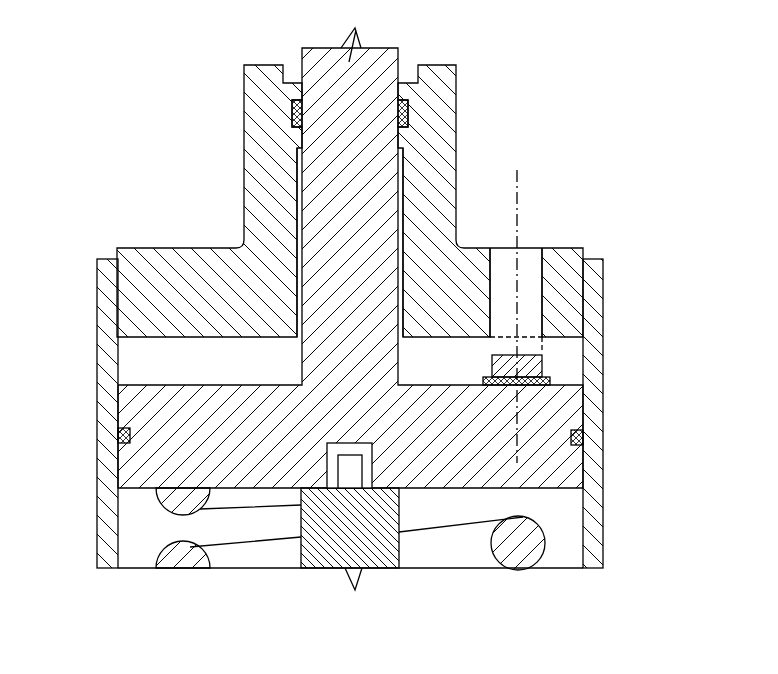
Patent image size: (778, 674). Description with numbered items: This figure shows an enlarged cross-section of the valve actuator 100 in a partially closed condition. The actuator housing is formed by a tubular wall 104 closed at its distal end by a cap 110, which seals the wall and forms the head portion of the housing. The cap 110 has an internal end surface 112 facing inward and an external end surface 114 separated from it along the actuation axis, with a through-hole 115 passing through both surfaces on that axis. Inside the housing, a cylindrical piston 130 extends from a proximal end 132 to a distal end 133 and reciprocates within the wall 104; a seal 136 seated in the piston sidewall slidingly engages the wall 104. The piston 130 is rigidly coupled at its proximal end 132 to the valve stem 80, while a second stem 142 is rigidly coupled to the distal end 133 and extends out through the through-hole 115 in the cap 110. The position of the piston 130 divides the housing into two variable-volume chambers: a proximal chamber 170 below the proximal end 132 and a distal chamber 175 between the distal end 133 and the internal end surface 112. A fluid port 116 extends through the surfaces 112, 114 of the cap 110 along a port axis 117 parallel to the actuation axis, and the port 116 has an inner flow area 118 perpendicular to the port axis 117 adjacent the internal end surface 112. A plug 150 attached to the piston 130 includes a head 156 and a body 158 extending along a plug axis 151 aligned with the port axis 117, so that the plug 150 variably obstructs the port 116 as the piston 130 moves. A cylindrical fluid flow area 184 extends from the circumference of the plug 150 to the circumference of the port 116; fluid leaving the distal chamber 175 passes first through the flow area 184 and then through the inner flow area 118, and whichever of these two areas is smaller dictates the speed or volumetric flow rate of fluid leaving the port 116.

The valve actuator 100 is at (157, 42).
The tubular wall 104 is at (105, 288).
The cap 110 is at (267, 117).
The internal end surface 112 is at (125, 340).
The external end surface 114 is at (168, 240).
The through-hole 115 is at (290, 188).
The fluid port 116 is at (492, 267).
The port axis 117 is at (517, 172).
The inner flow area 118 is at (527, 332).
The piston 130 is at (140, 463).
The proximal end 132 is at (570, 489).
The distal end 133 is at (215, 383).
The seal 136 is at (578, 437).
The second stem 142 is at (322, 63).
The plug 150 is at (535, 385).
The plug axis 151 is at (533, 473).
The head 156 is at (552, 384).
The body 158 is at (546, 368).
The proximal chamber 170 is at (140, 517).
The distal chamber 175 is at (135, 373).
The cylindrical fluid flow area 184 is at (484, 346).
The valve stem 80 is at (375, 565).